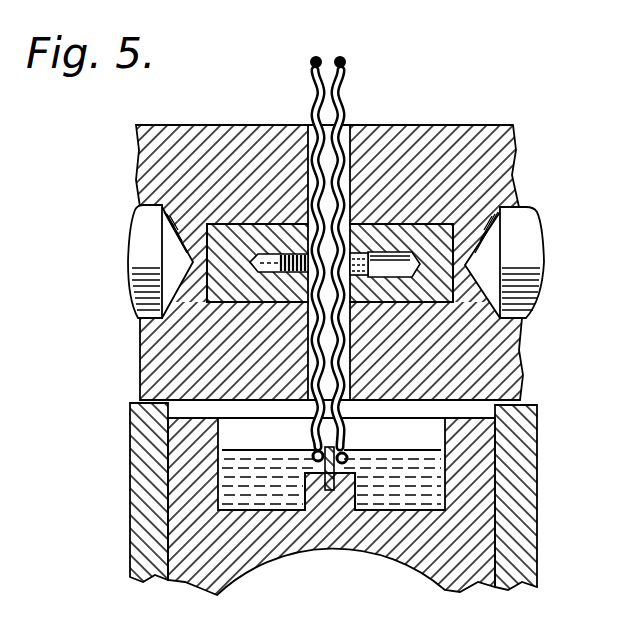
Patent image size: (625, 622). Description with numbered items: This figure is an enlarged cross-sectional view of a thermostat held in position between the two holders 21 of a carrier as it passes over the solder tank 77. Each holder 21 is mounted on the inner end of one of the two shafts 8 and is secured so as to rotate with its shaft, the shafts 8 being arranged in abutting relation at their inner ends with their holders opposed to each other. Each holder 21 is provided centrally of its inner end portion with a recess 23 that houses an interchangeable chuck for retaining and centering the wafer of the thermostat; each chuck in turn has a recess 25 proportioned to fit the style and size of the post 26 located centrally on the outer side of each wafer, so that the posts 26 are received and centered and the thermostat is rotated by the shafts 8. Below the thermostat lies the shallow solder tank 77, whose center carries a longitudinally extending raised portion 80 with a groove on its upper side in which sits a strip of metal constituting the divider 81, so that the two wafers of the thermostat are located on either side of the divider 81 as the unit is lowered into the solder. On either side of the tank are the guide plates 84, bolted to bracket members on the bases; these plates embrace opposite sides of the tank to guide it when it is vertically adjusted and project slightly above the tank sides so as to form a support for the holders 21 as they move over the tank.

The shaft 8 is at (140, 238).
The holder 21 is at (220, 132).
The recess 23 is at (221, 223).
The recess 25 is at (265, 252).
The post 26 is at (290, 253).
The solder tank 77 is at (248, 545).
The raised portion 80 is at (338, 492).
The divider 81 is at (323, 480).
The guide plate 84 is at (136, 444).